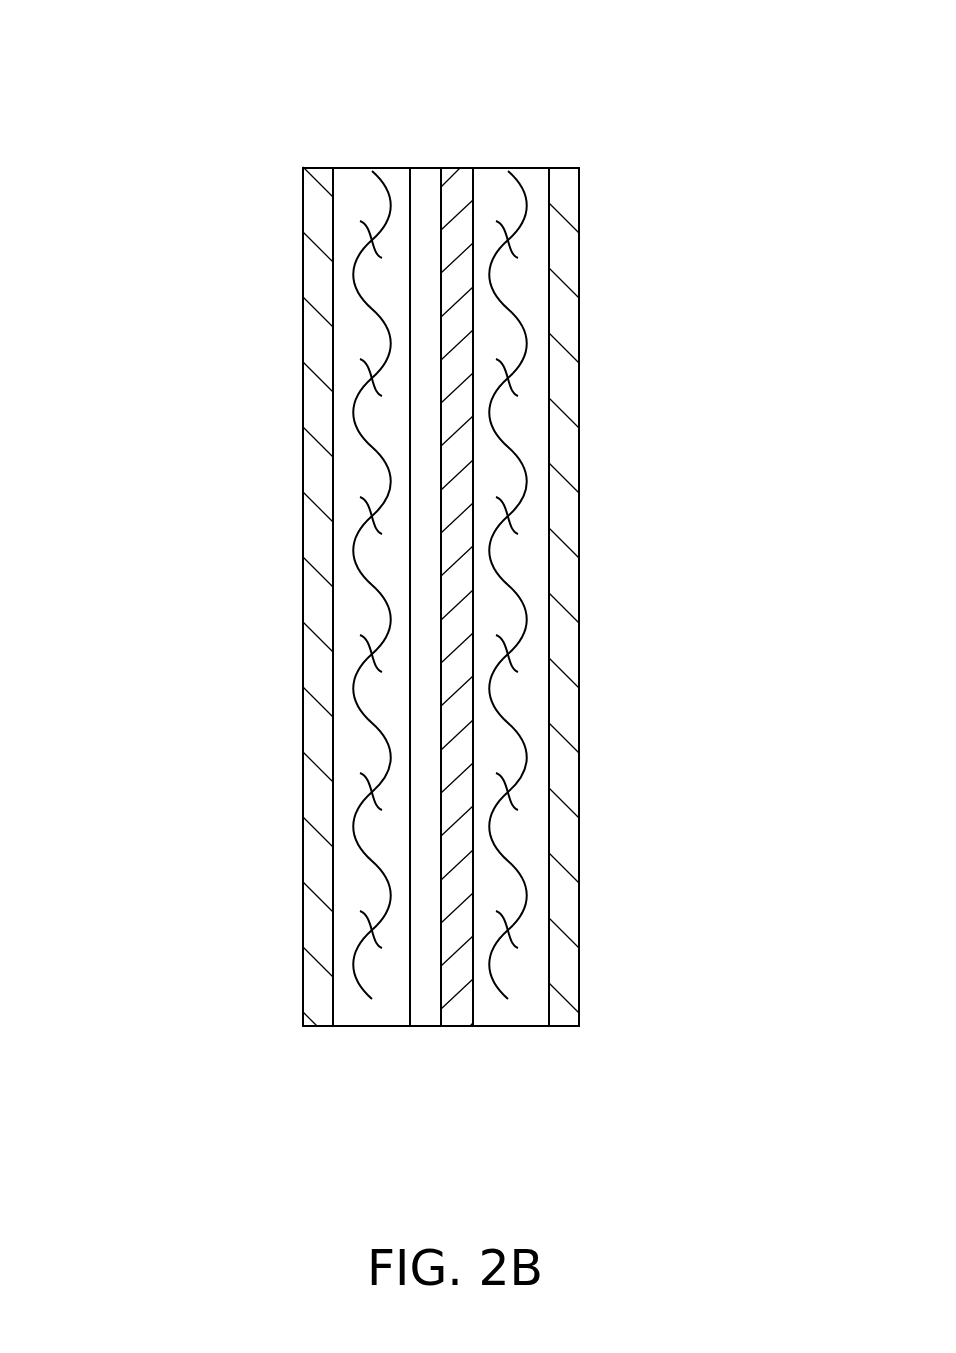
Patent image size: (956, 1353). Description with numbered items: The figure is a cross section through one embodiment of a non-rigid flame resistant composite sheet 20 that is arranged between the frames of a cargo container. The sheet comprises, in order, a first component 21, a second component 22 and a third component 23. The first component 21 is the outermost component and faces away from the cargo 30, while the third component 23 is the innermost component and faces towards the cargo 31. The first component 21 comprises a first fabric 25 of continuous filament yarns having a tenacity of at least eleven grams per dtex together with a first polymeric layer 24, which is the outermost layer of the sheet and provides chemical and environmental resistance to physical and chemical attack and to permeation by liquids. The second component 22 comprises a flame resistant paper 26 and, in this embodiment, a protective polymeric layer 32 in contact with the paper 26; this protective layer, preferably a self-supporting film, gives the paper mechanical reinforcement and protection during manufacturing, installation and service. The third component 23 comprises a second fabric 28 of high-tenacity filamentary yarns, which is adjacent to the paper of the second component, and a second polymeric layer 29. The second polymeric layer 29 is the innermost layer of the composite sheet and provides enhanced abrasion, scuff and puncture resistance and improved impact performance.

The non-rigid flame resistant composite sheet 20 is at (458, 62).
The first component 21 is at (579, 150).
The second component 22 is at (473, 150).
The third component 23 is at (410, 150).
The first polymeric layer 24 is at (563, 1026).
The first fabric 25 is at (513, 1026).
The flame resistant paper 26 is at (457, 1026).
The second fabric 28 is at (372, 1026).
The second polymeric layer 29 is at (319, 1026).
The direction facing away from the cargo 30 is at (607, 545).
The direction facing towards the cargo 31 is at (278, 545).
The protective polymeric layer 32 is at (426, 1026).